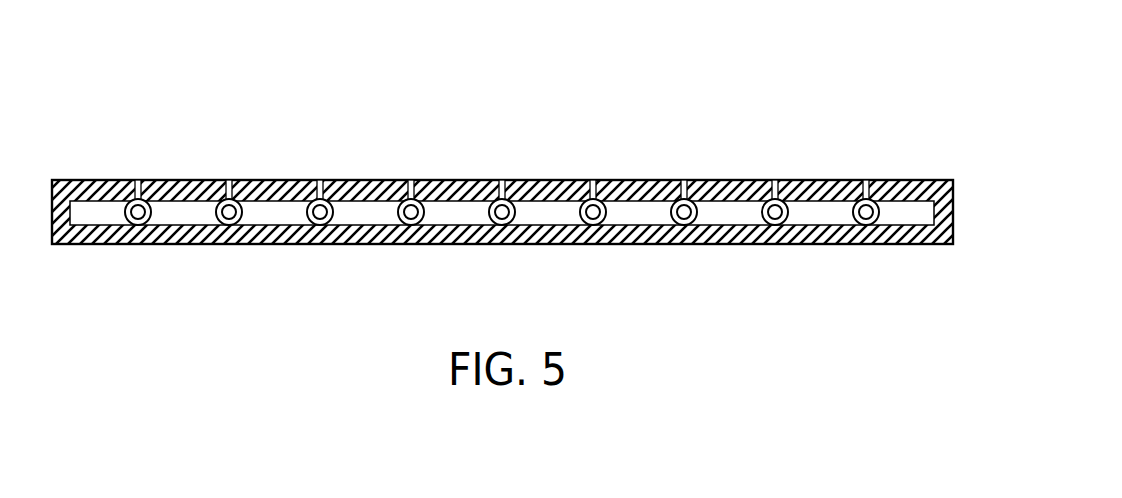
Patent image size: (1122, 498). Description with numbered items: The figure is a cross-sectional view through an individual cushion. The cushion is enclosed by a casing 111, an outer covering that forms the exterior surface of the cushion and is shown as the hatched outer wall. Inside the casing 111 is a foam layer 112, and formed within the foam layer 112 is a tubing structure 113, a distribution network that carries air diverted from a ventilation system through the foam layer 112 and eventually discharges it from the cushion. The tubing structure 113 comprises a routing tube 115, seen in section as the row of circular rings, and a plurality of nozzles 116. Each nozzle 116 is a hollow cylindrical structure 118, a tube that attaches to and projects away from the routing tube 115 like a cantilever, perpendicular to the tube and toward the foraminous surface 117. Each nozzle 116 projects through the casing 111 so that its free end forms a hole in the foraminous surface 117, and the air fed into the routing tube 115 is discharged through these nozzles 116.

The casing 111 is at (908, 180).
The foam layer 112 is at (953, 198).
The tubing structure 113 is at (879, 210).
The routing tube 115 is at (788, 210).
The plurality of nozzles 116 is at (686, 180).
The foraminous surface 117 is at (259, 180).
The hollow cylindrical structure 118 is at (422, 180).